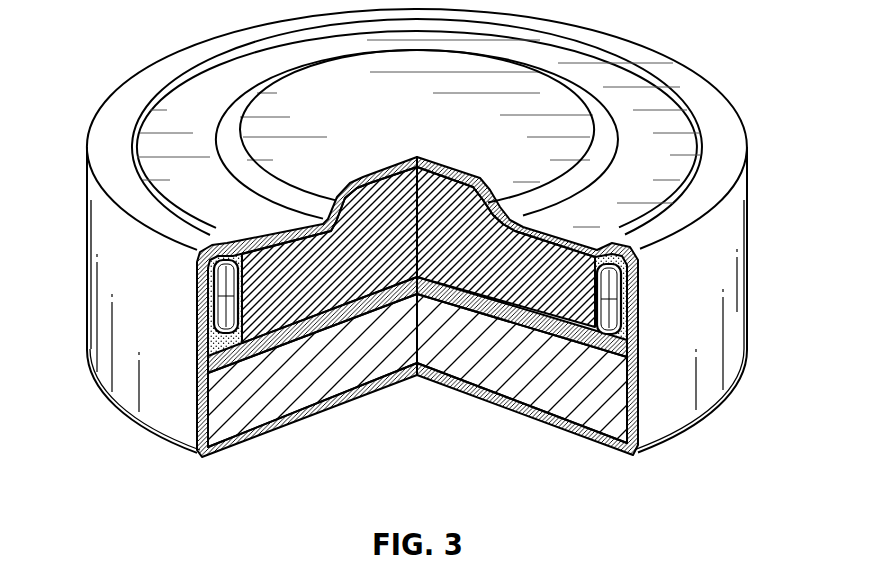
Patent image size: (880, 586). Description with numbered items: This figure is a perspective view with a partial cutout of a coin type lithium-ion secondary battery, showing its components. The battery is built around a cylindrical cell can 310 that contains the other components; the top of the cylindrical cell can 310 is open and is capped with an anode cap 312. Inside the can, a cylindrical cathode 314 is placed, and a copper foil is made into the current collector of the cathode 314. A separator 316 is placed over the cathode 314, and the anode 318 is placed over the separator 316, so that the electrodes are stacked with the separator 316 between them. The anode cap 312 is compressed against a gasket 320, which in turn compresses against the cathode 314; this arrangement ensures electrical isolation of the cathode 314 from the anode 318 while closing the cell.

The cylindrical cell can 310 is at (664, 72).
The anode cap 312 is at (193, 93).
The cylindrical cathode 314 is at (357, 370).
The separator 316 is at (233, 352).
The anode 318 is at (447, 190).
The gasket 320 is at (613, 350).